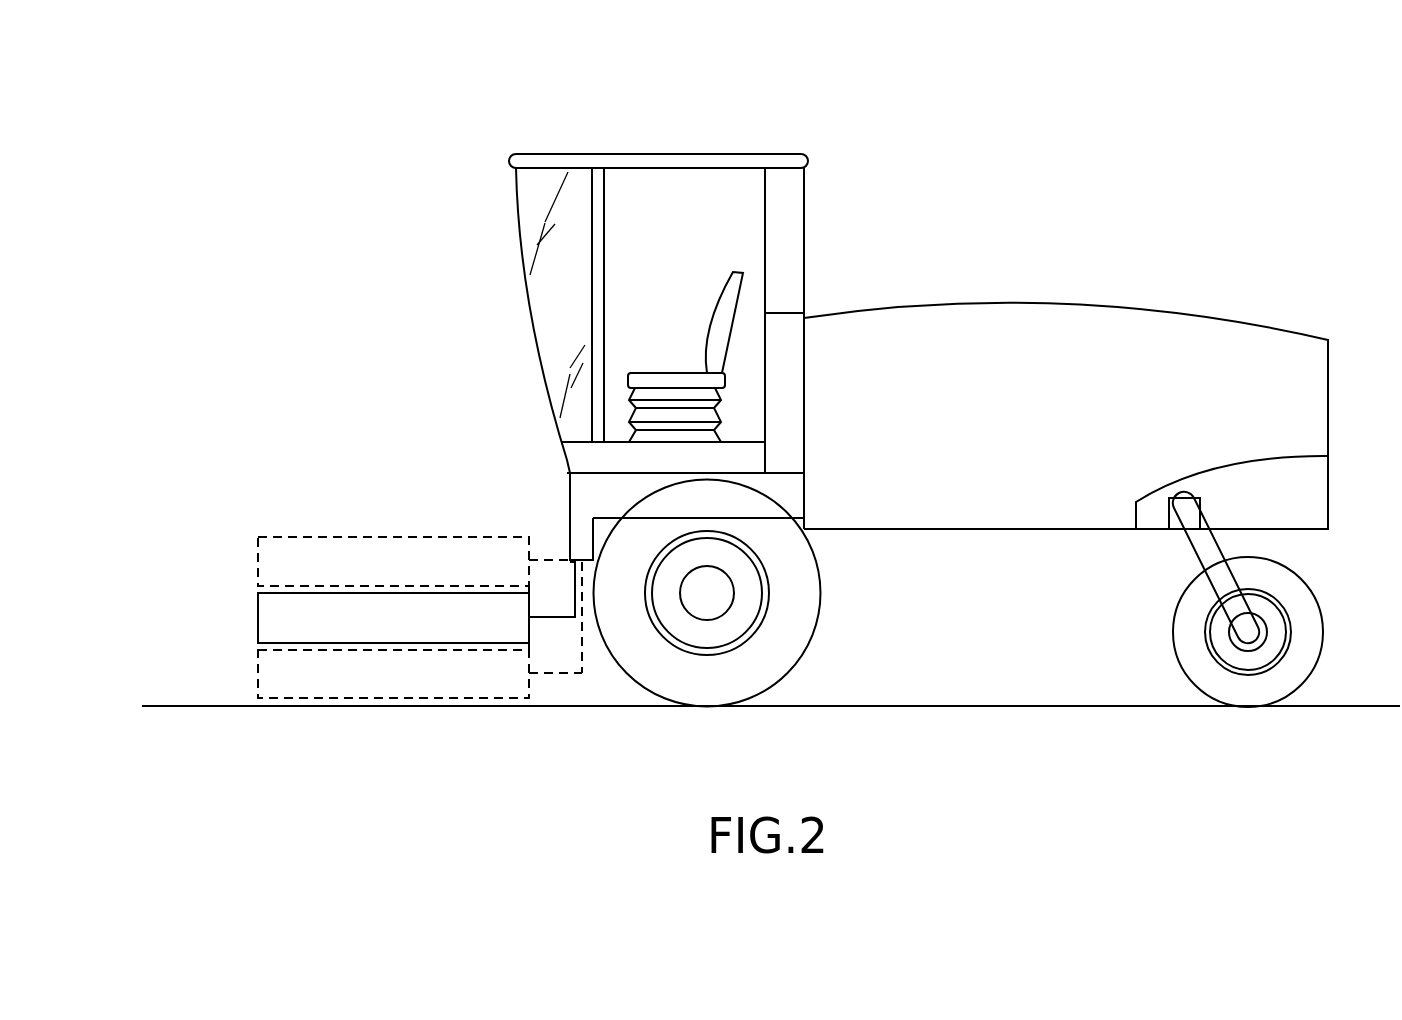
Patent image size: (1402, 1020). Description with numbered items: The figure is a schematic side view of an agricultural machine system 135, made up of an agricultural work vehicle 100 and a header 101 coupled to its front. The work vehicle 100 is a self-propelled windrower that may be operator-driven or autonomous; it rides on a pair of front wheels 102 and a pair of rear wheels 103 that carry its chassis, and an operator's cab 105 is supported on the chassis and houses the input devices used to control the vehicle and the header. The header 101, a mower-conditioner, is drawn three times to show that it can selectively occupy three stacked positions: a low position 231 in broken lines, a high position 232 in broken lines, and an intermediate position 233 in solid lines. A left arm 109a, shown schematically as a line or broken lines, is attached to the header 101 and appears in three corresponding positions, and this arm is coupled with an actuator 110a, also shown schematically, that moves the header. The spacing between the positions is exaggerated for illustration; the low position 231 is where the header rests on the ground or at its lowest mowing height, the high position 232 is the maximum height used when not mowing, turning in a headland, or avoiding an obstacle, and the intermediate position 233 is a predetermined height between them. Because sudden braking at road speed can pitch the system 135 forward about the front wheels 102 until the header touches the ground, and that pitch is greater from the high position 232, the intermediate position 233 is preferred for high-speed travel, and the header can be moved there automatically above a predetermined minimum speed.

The agricultural machine system 135 is at (1229, 156).
The agricultural work vehicle 100 is at (1224, 308).
The operator's cab 105 is at (752, 163).
The front wheels 102 is at (805, 648).
The rear wheels 103 is at (1317, 654).
The agricultural machine 101 is at (246, 537).
The high position 232 is at (243, 566).
The intermediate position 233 is at (243, 626).
The low position 231 is at (243, 688).
The actuator 110a is at (577, 533).
The left arm 109a is at (548, 560).